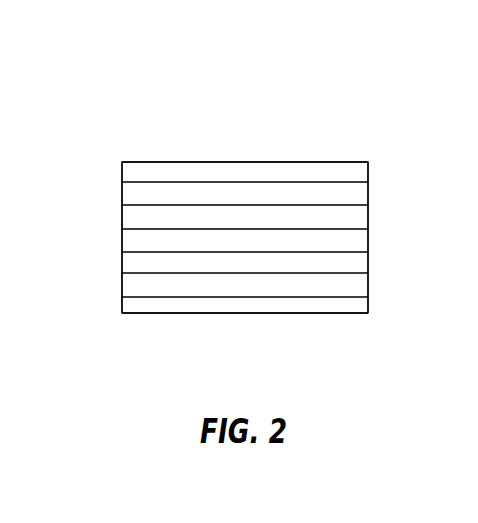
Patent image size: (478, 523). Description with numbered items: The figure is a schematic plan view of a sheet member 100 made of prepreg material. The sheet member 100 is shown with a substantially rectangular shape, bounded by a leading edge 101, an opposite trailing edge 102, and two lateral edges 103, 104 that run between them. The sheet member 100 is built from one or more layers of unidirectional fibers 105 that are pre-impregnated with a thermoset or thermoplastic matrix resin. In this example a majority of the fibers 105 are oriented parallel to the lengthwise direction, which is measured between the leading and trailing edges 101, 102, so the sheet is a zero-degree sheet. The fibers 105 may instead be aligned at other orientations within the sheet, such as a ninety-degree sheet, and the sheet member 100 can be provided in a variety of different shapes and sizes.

The sheet member 100 is at (348, 110).
The leading edge 101 is at (368, 283).
The trailing edge 102 is at (121, 285).
The lateral edge 103 is at (213, 162).
The lateral edge 104 is at (246, 313).
The unidirectional fibers 105 is at (345, 228).